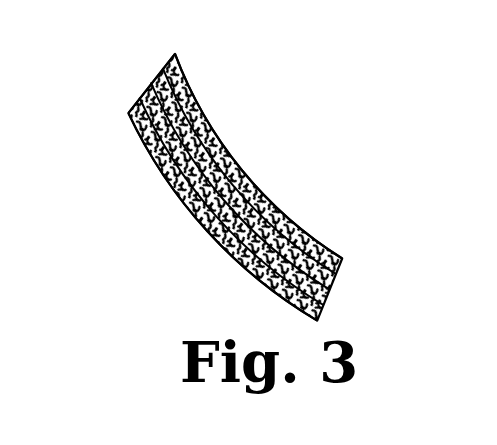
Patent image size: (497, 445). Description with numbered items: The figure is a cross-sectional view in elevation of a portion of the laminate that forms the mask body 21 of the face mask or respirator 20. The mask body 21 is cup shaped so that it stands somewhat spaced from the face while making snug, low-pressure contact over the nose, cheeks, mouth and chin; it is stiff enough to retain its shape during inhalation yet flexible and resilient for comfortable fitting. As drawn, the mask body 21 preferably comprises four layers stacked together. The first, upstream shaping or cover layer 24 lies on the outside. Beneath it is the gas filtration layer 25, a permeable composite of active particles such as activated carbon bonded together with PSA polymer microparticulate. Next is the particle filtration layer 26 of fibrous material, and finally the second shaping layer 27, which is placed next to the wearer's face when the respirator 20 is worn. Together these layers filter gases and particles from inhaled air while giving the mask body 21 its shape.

The face mask or respirator 20 is at (170, 268).
The mask body 21 is at (120, 136).
The first shaping or cover layer 24 is at (325, 322).
The gas filtration layer 25 is at (151, 93).
The particle filtration layer 26 is at (337, 282).
The second shaping layer 27 is at (340, 262).